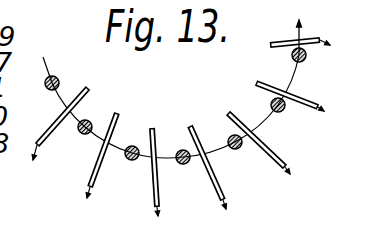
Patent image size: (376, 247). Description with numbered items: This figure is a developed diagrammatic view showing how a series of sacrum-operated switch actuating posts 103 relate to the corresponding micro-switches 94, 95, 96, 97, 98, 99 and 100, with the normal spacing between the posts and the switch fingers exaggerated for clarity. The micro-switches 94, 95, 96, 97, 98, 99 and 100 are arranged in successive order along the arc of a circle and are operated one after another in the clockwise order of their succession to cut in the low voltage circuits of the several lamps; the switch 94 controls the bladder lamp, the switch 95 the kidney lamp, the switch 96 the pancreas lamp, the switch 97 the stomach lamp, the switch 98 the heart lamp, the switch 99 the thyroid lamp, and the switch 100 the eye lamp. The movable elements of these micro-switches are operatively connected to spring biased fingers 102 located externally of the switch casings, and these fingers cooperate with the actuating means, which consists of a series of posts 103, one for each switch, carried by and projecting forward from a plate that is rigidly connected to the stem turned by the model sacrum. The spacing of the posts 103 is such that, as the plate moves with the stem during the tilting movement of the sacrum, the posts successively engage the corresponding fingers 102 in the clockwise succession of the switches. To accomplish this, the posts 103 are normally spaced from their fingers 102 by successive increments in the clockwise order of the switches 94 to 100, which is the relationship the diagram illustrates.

The micro-switch 94 is at (302, 47).
The micro-switch 95 is at (292, 114).
The micro-switch 96 is at (259, 158).
The micro-switch 97 is at (216, 182).
The micro-switch 98 is at (156, 187).
The micro-switch 99 is at (92, 173).
The micro-switch 100 is at (50, 143).
The spring biased fingers 102 is at (151, 130).
The posts 103 is at (271, 104).